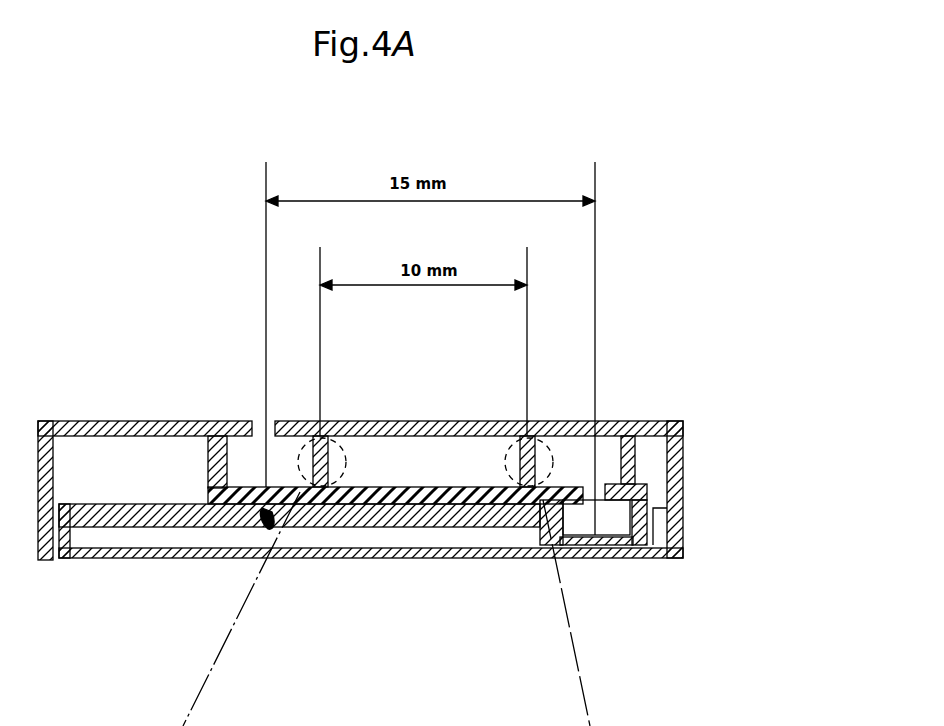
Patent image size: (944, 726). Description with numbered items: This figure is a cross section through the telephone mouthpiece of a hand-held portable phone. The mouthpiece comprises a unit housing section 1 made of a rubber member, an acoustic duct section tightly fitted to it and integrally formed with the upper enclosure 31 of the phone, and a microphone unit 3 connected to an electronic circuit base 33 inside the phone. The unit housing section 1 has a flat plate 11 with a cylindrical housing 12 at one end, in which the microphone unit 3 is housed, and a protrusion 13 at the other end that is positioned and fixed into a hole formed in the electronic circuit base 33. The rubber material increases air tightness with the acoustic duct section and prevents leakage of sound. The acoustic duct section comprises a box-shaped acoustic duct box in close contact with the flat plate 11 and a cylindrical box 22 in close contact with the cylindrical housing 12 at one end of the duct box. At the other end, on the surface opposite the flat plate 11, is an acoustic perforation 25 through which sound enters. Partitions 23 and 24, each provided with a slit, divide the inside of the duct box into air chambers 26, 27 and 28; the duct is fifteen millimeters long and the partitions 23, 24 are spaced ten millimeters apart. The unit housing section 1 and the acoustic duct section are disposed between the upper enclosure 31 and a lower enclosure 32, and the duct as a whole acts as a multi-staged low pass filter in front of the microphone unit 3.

The unit housing section 1 is at (431, 443).
The cylindrical housing 12 is at (675, 489).
The microphone unit 3 is at (622, 527).
The flat plate 11 is at (452, 512).
The protrusion 13 is at (265, 518).
The cylindrical box 22 is at (636, 458).
The partition 23 is at (350, 452).
The partition 24 is at (543, 448).
The acoustic perforation 25 is at (258, 432).
The air chamber 26 is at (234, 452).
The air chamber 27 is at (457, 450).
The air chamber 28 is at (600, 455).
The upper enclosure 31 is at (88, 421).
The lower enclosure 32 is at (393, 558).
The electronic circuit base 33 is at (155, 527).